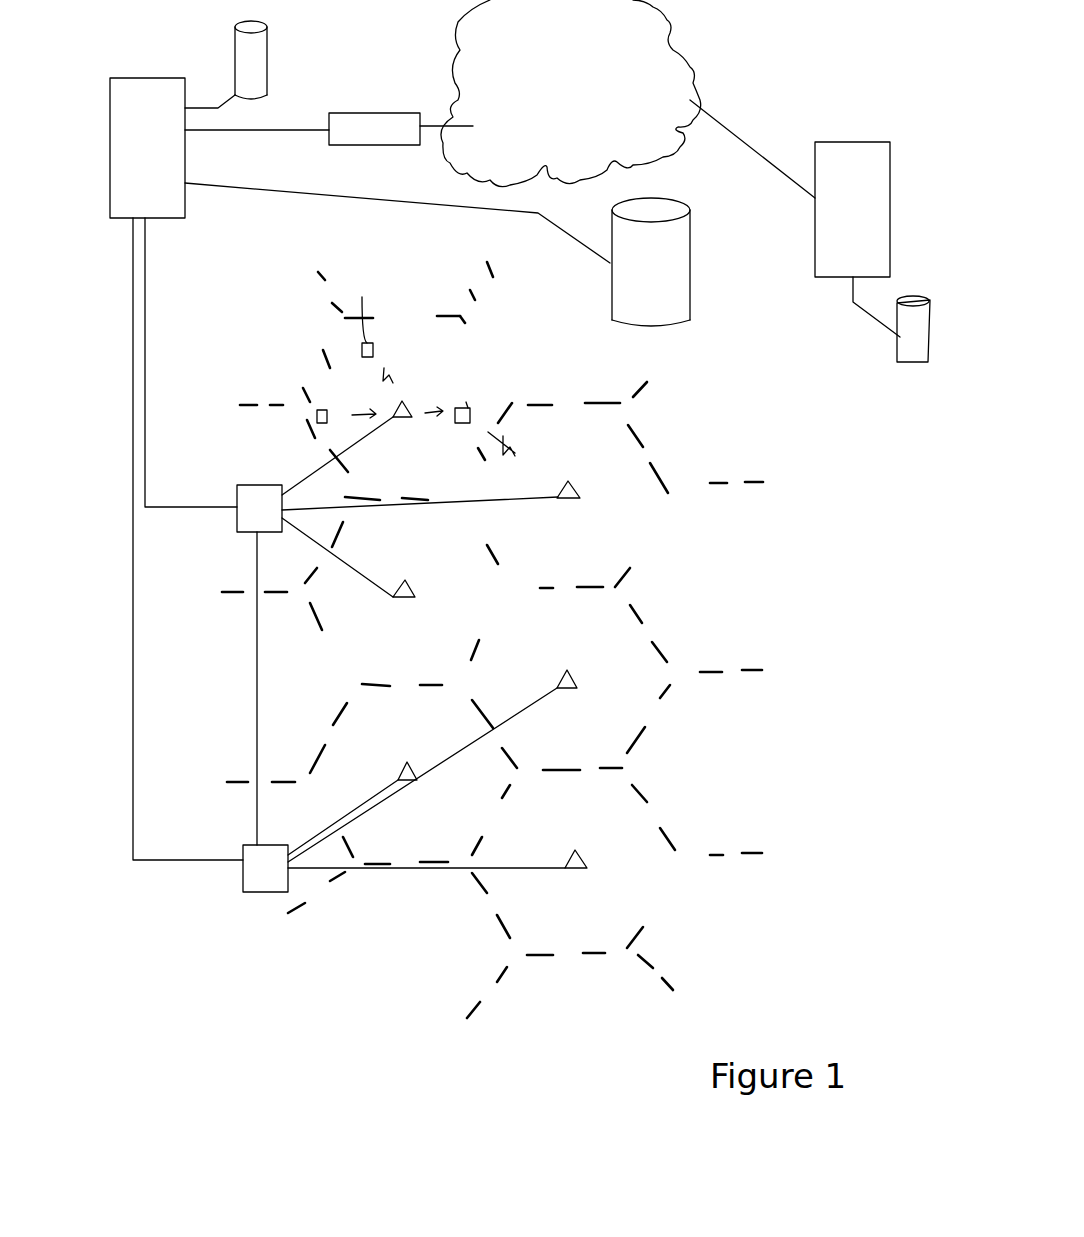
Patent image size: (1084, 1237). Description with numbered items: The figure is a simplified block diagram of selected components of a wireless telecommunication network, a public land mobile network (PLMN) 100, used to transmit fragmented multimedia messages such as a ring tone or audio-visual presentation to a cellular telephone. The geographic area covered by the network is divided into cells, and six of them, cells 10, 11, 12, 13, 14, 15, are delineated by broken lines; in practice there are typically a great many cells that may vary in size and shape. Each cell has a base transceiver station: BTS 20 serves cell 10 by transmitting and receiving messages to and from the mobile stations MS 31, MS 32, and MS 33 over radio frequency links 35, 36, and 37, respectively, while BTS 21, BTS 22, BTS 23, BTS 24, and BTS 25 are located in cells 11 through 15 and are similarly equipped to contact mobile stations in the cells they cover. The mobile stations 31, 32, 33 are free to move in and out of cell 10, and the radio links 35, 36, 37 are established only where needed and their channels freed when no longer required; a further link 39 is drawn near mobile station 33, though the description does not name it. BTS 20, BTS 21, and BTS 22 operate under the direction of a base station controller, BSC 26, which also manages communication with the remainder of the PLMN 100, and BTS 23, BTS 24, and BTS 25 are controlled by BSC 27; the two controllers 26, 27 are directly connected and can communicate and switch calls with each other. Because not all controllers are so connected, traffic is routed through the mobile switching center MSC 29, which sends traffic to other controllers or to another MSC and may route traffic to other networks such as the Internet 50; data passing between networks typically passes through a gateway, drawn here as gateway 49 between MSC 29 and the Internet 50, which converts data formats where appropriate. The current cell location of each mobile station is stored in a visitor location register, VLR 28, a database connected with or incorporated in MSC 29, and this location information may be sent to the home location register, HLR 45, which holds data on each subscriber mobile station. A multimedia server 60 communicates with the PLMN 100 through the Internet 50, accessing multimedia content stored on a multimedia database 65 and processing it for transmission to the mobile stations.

The cell 10 is at (412, 327).
The cell 11 is at (313, 605).
The cell 12 is at (628, 453).
The cell 13 is at (347, 735).
The cell 14 is at (632, 642).
The cell 15 is at (630, 820).
The base transceiver station 20 is at (405, 400).
The base transceiver station 21 is at (402, 600).
The base transceiver station 22 is at (580, 492).
The base transceiver station 23 is at (400, 770).
The base transceiver station 24 is at (577, 681).
The base transceiver station 25 is at (587, 860).
The base station controller 26 is at (248, 483).
The base station controller 27 is at (240, 887).
The visitor location register 28 is at (233, 43).
The mobile switching center 29 is at (122, 73).
The mobile station 31 is at (317, 413).
The mobile station 32 is at (364, 311).
The mobile station 33 is at (473, 410).
The radio frequency link 35 is at (363, 407).
The radio frequency link 36 is at (390, 367).
The radio frequency link 37 is at (430, 422).
The handover 39 is at (510, 440).
The home location register 45 is at (690, 225).
The gateway 49 is at (357, 107).
The Internet 50 is at (672, 38).
The multimedia server 60 is at (815, 272).
The multimedia database 65 is at (897, 353).
The public land mobile network 100 is at (350, 1012).